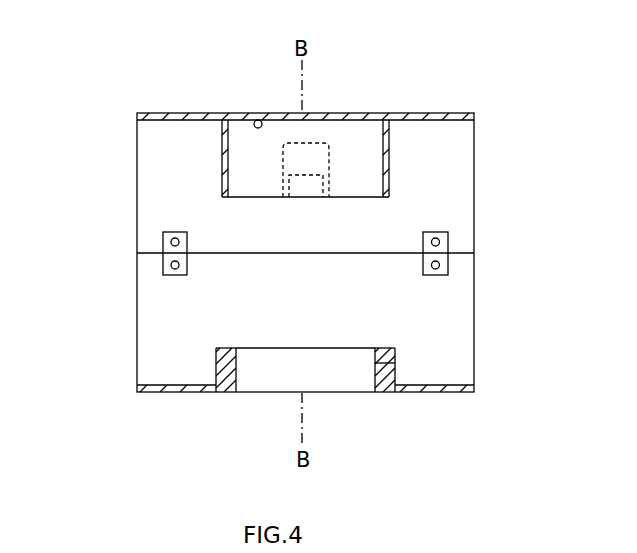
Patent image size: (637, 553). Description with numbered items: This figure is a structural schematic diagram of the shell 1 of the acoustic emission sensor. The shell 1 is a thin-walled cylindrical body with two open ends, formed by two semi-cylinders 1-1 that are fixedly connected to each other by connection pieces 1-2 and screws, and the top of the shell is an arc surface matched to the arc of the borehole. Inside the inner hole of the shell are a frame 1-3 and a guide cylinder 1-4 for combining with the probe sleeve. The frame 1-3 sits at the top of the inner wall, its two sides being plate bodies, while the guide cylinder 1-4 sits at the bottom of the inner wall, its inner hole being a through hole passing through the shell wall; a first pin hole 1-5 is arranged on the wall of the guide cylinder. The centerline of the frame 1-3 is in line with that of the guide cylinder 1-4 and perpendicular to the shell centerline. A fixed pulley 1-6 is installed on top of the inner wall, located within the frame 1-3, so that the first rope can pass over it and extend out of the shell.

The shell 1 is at (272, 247).
The semi-cylinder 1-1 is at (323, 216).
The connection piece 1-2 is at (241, 304).
The frame 1-3 is at (256, 108).
The guide cylinder 1-4 is at (191, 412).
The first pin hole 1-5 is at (436, 414).
The fixed pulley 1-6 is at (234, 73).